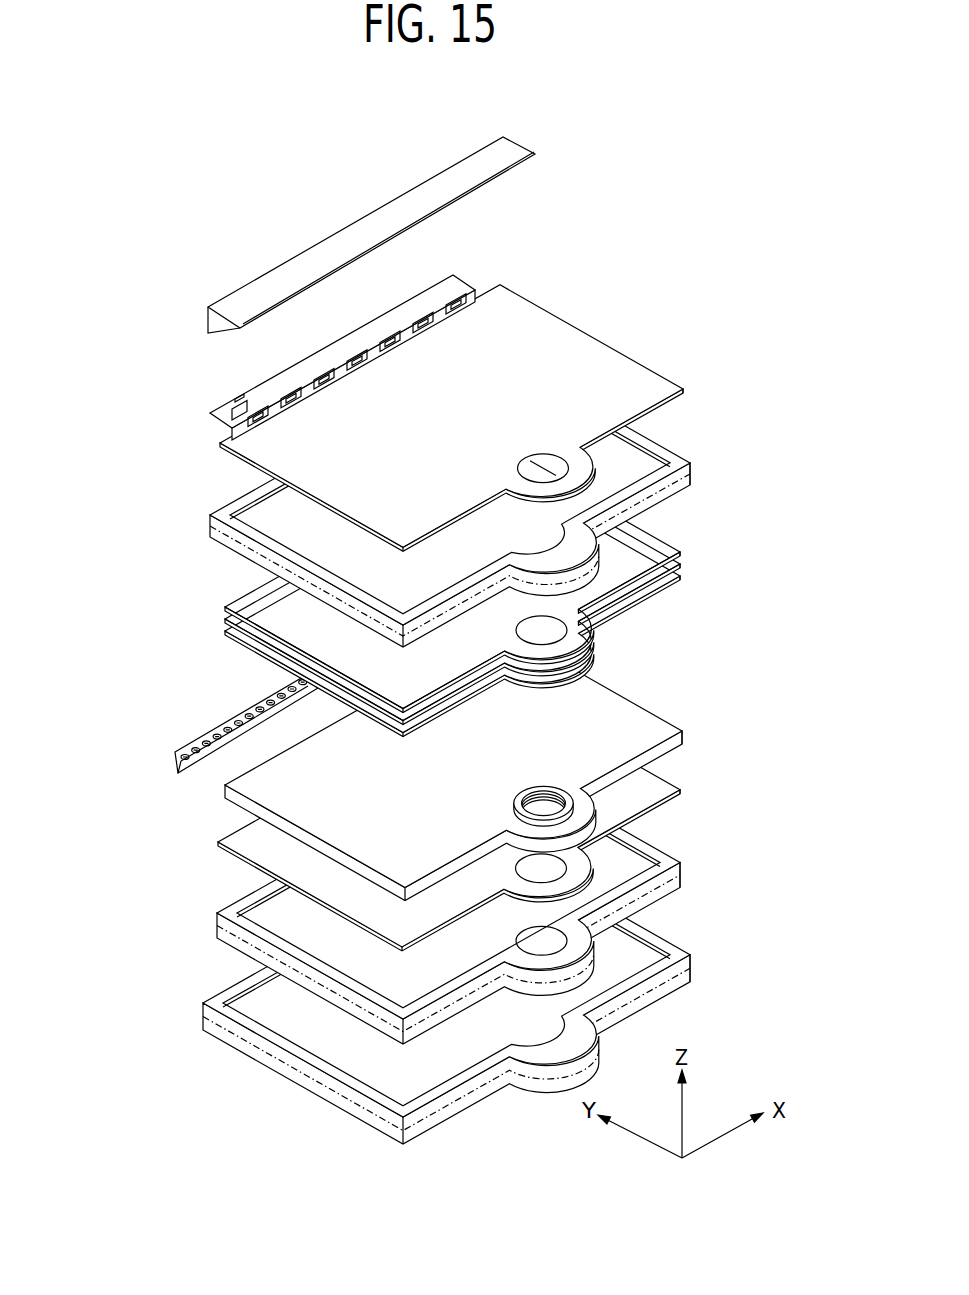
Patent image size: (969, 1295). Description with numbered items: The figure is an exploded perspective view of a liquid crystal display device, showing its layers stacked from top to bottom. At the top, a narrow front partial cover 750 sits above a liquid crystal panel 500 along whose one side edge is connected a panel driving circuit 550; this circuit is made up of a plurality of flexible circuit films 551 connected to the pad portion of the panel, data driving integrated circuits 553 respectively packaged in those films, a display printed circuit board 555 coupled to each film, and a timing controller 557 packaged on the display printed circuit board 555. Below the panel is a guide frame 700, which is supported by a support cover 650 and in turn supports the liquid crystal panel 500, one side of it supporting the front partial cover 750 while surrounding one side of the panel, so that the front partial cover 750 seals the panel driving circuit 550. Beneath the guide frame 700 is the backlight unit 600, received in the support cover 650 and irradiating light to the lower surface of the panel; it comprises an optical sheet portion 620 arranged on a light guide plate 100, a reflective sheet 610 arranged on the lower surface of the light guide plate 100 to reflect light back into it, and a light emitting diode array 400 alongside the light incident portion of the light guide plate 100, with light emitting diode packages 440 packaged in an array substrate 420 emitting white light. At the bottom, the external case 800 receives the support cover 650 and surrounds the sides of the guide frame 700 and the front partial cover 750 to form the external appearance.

The light guide plate 100 is at (272, 790).
The light emitting diode array 400 is at (190, 725).
The array substrate 420 is at (230, 725).
The light emitting diode packages 440 is at (250, 700).
The liquid crystal panel 500 is at (584, 346).
The panel driving circuit 550 is at (287, 369).
The flexible circuit films 551 is at (237, 445).
The data driving integrated circuits 553 is at (249, 421).
The display printed circuit board 555 is at (238, 399).
The timing controller 557 is at (244, 412).
The backlight unit 600 is at (348, 701).
The reflective sheet 610 is at (272, 852).
The optical sheet portion 620 is at (222, 605).
The support cover 650 is at (683, 868).
The guide frame 700 is at (700, 470).
The front partial cover 750 is at (382, 222).
The external case 800 is at (698, 960).